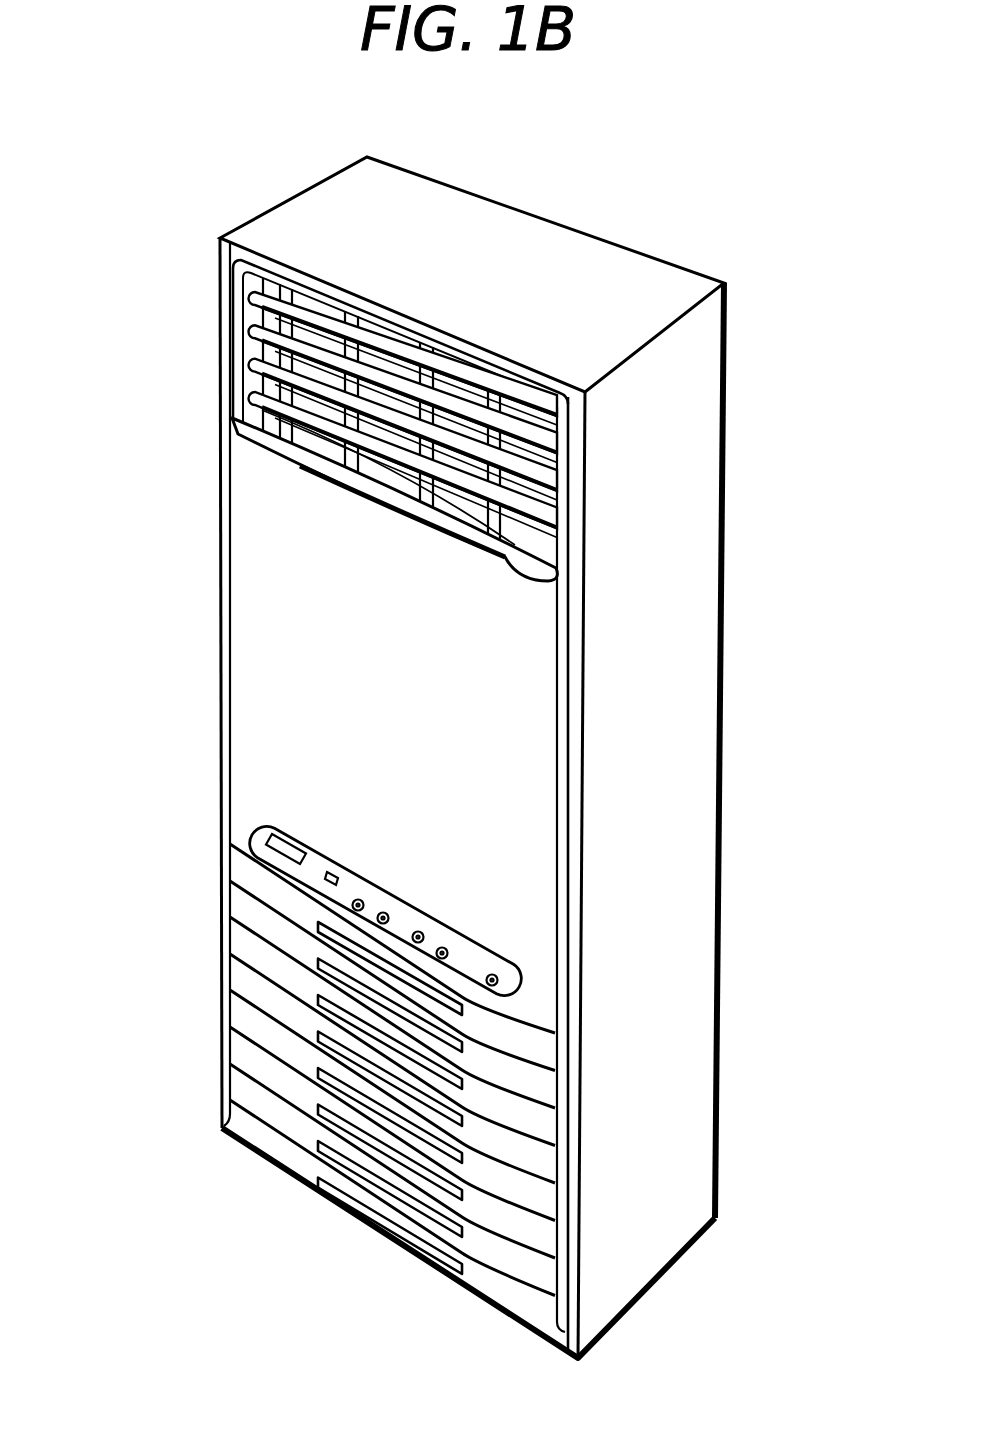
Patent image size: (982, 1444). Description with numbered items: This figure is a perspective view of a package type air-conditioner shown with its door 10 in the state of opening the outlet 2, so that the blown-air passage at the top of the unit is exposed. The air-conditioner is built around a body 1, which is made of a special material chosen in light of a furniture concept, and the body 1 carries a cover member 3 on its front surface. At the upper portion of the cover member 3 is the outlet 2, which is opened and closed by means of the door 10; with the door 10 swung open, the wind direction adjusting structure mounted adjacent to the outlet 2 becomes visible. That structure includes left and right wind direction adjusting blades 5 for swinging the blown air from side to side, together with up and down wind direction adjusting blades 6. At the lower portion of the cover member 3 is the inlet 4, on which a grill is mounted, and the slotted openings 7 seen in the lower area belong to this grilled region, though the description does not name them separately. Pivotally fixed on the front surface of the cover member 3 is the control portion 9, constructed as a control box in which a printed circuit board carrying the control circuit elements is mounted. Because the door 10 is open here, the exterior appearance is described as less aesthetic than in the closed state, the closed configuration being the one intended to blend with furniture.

The body 1 is at (697, 758).
The outlet 2 is at (273, 349).
The cover member 3 is at (247, 737).
The inlet 4 is at (259, 988).
The left and right wind direction adjusting blades 5 is at (258, 418).
The up and down wind direction adjusting blades 6 is at (320, 322).
The inlet slots 7 is at (323, 1117).
The control portion 9 is at (463, 958).
The door 10 is at (547, 577).